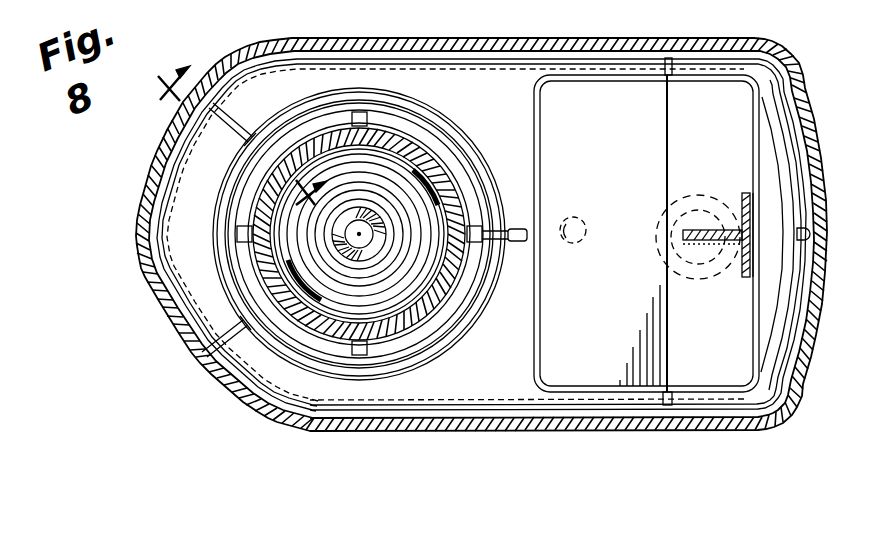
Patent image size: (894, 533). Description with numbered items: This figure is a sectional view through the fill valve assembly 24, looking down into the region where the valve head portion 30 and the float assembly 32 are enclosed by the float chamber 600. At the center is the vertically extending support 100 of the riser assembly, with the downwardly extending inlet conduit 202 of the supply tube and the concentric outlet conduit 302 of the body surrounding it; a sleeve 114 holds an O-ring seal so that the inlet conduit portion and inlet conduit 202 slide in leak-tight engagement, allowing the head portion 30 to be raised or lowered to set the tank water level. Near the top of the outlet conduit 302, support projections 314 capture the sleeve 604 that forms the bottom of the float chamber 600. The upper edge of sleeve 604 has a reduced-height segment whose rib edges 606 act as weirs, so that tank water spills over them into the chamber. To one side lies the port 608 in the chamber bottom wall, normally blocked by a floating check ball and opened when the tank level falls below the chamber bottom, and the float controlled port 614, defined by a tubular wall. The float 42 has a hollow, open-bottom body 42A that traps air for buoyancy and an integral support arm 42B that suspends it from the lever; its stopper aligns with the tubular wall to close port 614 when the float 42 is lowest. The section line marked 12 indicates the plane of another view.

The assembly 24 is at (140, 389).
The valve head portion 30 is at (184, 411).
The float assembly 32 is at (802, 174).
The float 42 is at (802, 257).
The hollow, open bottom body 42A is at (778, 308).
The integral support arm 42B is at (749, 207).
The vertically extending support 100 is at (425, 178).
The sleeve 114 is at (377, 197).
The inlet conduit 202 is at (357, 252).
The outlet conduit 302 is at (295, 180).
The support projections 314 is at (368, 118).
The float chamber 600 is at (150, 322).
The sleeve 604 is at (215, 241).
The upper edges 606 is at (246, 128).
The port 608 is at (567, 221).
The float controlled port 614 is at (684, 220).
The section line 12 is at (255, 125).